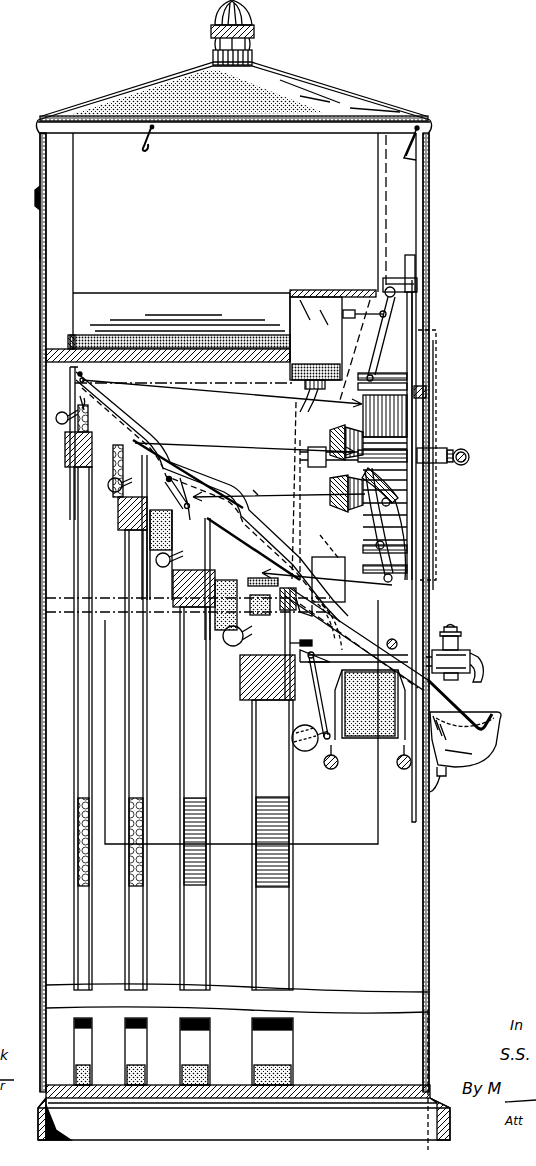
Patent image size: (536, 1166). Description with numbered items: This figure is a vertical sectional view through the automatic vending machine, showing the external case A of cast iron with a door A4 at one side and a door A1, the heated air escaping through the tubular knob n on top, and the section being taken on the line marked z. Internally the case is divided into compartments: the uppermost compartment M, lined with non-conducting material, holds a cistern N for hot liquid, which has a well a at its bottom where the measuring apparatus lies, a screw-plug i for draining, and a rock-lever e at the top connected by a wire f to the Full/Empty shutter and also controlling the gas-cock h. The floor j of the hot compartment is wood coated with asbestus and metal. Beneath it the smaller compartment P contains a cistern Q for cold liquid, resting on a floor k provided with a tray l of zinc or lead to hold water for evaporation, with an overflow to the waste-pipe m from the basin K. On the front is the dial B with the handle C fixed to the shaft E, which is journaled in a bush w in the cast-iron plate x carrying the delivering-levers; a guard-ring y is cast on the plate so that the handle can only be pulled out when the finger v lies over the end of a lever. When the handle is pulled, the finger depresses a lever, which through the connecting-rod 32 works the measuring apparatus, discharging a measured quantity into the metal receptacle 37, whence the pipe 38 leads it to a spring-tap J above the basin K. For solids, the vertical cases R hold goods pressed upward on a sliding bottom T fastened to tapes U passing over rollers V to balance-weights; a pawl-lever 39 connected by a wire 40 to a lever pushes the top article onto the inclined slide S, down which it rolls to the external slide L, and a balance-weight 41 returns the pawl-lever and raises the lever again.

The tubular knob n is at (237, 32).
The lever z is at (305, 92).
The uppermost compartment M is at (232, 607).
The cistern N is at (229, 241).
The rock-lever e is at (147, 127).
The wire f is at (415, 184).
The door A4 is at (40, 248).
The well a is at (180, 323).
The screw-plug i is at (68, 344).
The floor j is at (183, 374).
The tray l is at (70, 603).
The floor k is at (164, 618).
The metal receptacle 37 is at (328, 453).
The connecting-rod 32 is at (370, 318).
The finger v is at (355, 350).
The cast-iron plate x is at (416, 594).
The guard-ring y is at (398, 374).
The dial B is at (428, 393).
The gas-cock h is at (368, 484).
The shaft E is at (454, 440).
The handle C is at (465, 457).
The pipe 38 is at (376, 560).
The wire 40 is at (236, 492).
The inclined slide S is at (252, 531).
The smaller compartment P is at (103, 443).
The cistern Q is at (216, 559).
The bush w is at (92, 460).
The balance-weight 41 is at (192, 590).
The tapes or bands U is at (172, 530).
The rollers V is at (200, 516).
The vertical case R is at (239, 728).
The pawl-lever 39 is at (318, 712).
The spring-tap J is at (461, 654).
The slide L is at (454, 711).
The basin K is at (465, 752).
The waste-pipe m is at (418, 900).
The external case A is at (41, 940).
The door A1 is at (429, 937).
The sliding bottom T is at (302, 1073).
The base Z is at (244, 1081).